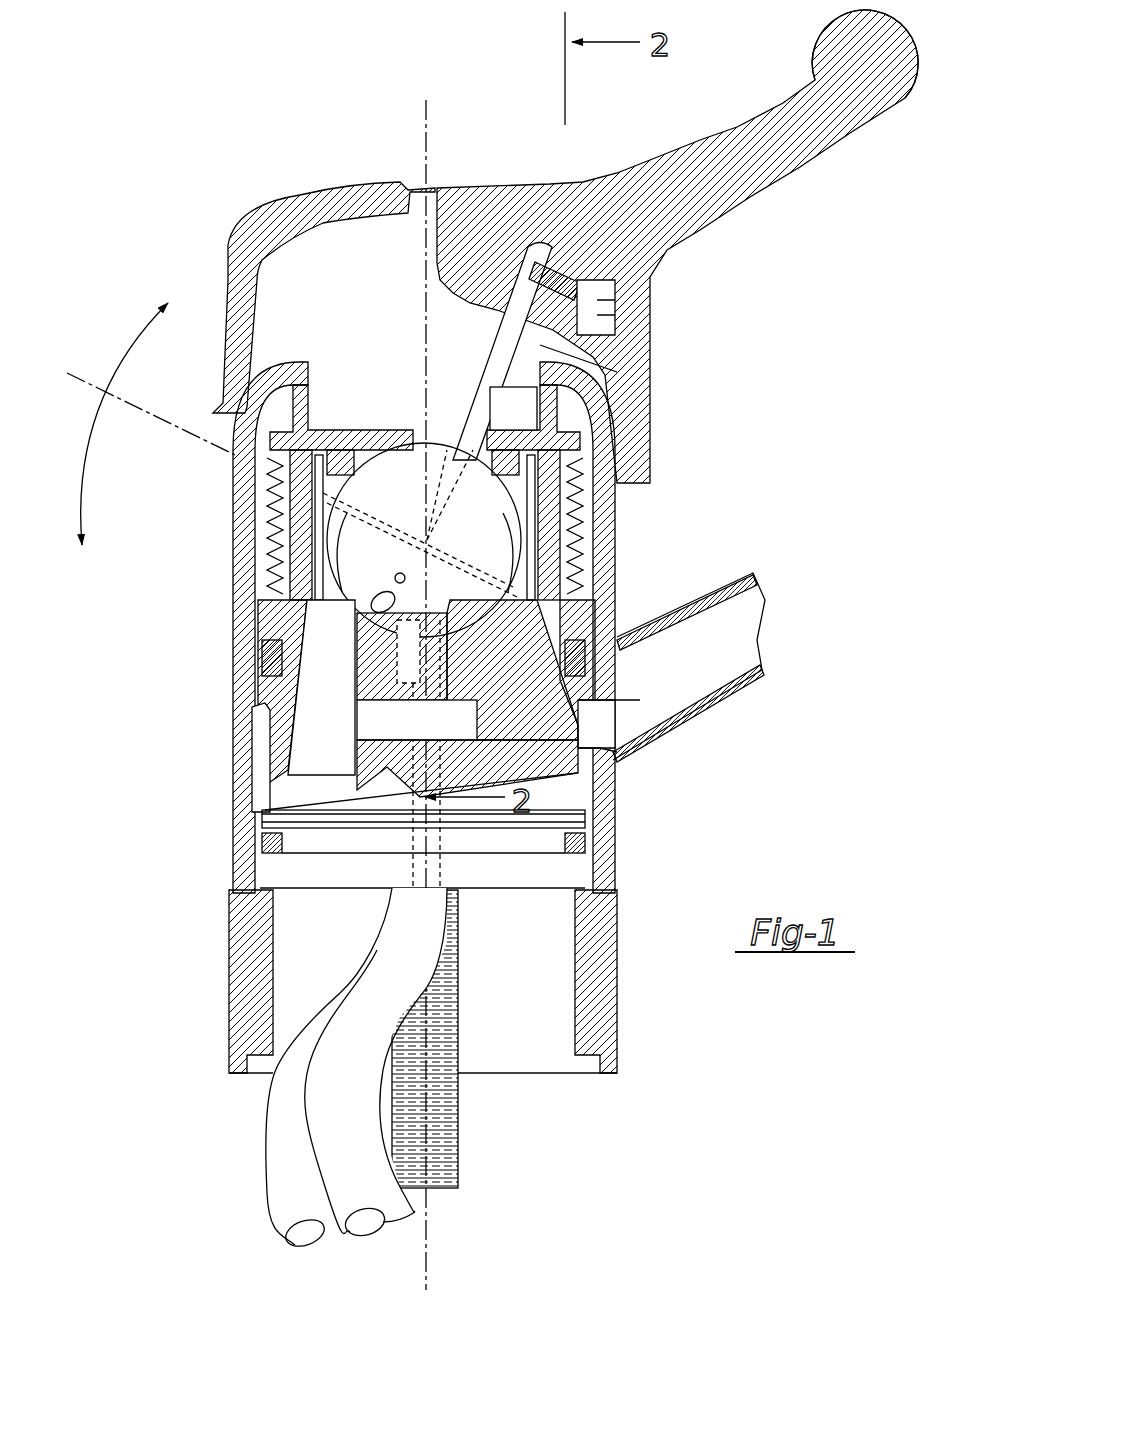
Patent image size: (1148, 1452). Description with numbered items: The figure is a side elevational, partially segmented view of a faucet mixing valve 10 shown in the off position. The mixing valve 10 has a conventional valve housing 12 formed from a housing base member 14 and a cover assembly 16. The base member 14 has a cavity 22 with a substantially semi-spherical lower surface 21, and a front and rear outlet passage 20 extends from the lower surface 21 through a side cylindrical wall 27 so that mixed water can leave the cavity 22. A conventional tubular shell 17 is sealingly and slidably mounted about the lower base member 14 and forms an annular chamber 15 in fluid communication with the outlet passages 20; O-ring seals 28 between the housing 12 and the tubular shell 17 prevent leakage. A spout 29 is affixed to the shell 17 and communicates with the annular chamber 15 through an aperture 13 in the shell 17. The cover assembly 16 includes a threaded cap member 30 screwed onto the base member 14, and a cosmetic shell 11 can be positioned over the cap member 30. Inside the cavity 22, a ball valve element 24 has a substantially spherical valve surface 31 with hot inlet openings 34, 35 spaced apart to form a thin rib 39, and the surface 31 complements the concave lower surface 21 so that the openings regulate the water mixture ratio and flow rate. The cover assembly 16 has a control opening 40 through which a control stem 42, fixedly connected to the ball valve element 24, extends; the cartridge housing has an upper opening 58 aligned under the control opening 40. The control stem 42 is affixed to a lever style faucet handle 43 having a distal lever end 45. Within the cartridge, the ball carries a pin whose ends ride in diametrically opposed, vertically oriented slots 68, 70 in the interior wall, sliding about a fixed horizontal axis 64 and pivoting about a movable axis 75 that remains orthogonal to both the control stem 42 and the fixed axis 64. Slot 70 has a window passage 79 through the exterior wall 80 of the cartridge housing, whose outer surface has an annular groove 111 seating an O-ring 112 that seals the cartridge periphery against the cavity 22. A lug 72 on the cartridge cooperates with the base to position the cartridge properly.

The mixing valve 10 is at (690, 382).
The cosmetic shell 11 is at (233, 462).
The valve housing 12 is at (232, 678).
The aperture 13 is at (597, 723).
The housing base member 14 is at (300, 812).
The annular chamber 15 is at (257, 737).
The cover assembly 16 is at (237, 552).
The tubular shell 17 is at (247, 807).
The outlet passage 20 is at (350, 727).
The lower surface 21 is at (423, 590).
The cavity 22 is at (380, 617).
The ball valve element 24 is at (435, 441).
The side cylindrical wall 27 is at (265, 787).
The O-ring seals 28 is at (427, 143).
The spout 29 is at (735, 663).
The threaded cap member 30 is at (277, 570).
The spherical valve surface 31 is at (407, 440).
The hot inlet opening 34 is at (388, 610).
The hot inlet opening 35 is at (398, 575).
The thin rib 39 is at (357, 600).
The control opening 40 is at (303, 372).
The control stem 42 is at (500, 357).
The faucet handle 43 is at (670, 259).
The distal lever end 45 is at (923, 53).
The upper opening 58 is at (562, 325).
The fixed horizontal axis 64 is at (430, 543).
The longitudinally extending slot 68 is at (610, 487).
The longitudinally extending slot 70 is at (338, 590).
The lug 72 is at (597, 440).
The movable axis 75 is at (123, 400).
The window passage 79 is at (448, 570).
The exterior wall 80 is at (310, 520).
The annular groove 111 is at (277, 497).
The O-ring 112 is at (553, 502).